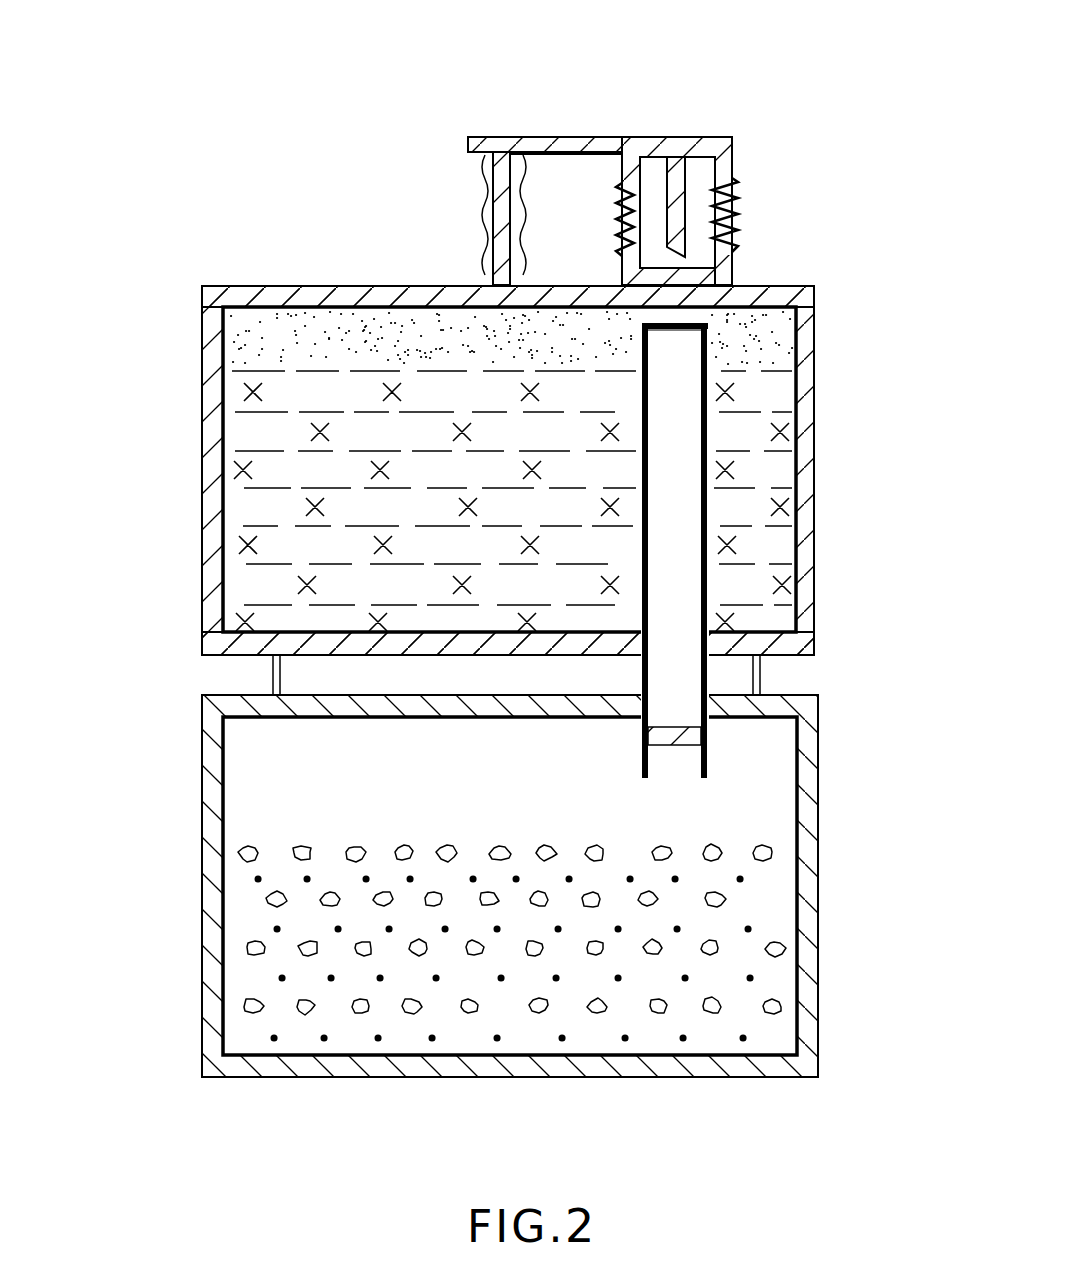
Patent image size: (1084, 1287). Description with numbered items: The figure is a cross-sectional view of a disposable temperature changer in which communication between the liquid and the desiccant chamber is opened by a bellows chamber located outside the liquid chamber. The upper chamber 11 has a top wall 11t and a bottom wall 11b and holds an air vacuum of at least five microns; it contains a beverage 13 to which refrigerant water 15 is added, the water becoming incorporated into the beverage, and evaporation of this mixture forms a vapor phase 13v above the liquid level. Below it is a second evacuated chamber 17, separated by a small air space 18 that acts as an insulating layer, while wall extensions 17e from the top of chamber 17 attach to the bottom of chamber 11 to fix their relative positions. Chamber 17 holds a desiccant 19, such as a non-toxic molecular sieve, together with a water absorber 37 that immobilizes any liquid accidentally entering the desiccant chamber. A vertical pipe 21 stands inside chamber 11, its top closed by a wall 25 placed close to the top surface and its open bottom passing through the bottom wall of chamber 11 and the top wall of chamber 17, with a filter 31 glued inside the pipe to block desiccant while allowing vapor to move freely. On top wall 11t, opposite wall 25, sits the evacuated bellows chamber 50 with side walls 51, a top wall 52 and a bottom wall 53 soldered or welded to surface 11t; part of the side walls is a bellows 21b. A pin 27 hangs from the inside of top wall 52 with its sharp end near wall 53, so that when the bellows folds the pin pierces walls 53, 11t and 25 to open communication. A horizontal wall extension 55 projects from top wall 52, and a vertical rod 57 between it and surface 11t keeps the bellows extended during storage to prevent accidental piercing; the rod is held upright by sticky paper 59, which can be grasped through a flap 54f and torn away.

The chamber 11 is at (814, 428).
The top wall 11t is at (287, 287).
The bottom wall 11b is at (806, 665).
The beverage 13 is at (412, 531).
The vapor phase 13v is at (343, 349).
The water 15 is at (530, 392).
The chamber 17 is at (818, 975).
The wall extensions 17e is at (272, 690).
The air space 18 is at (470, 686).
The desiccant 19 is at (302, 850).
The pipe 21 is at (690, 596).
The bellows 21b is at (742, 206).
The wall 25 is at (675, 332).
The pin 27 is at (727, 268).
The filter 31 is at (680, 755).
The water absorber 37 is at (473, 878).
The bellows chamber 50 is at (654, 175).
The side walls 51 is at (735, 178).
The top wall 52 is at (690, 137).
The bottom wall 53 is at (646, 266).
The flap 54f is at (470, 151).
The horizontal wall extension 55 is at (555, 137).
The vertical rod 57 is at (523, 184).
The sticky paper 59 is at (481, 178).